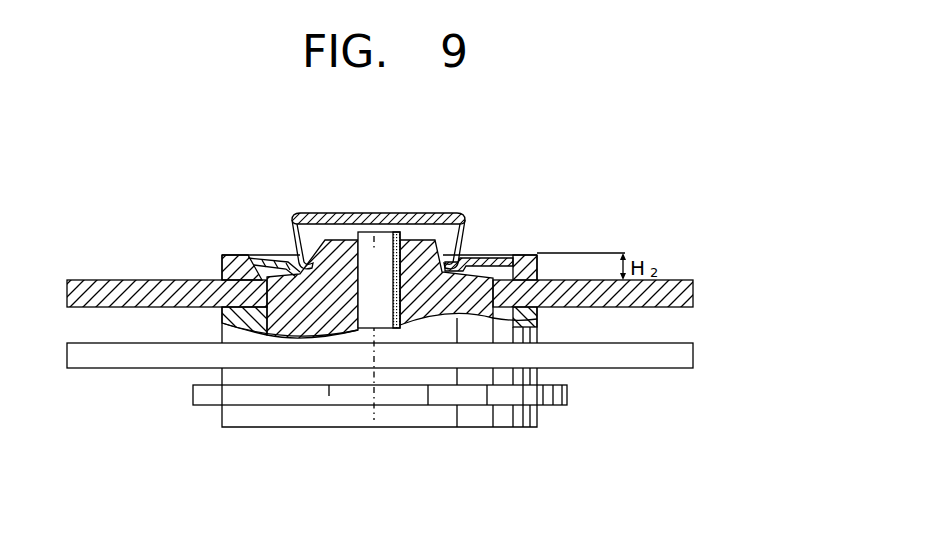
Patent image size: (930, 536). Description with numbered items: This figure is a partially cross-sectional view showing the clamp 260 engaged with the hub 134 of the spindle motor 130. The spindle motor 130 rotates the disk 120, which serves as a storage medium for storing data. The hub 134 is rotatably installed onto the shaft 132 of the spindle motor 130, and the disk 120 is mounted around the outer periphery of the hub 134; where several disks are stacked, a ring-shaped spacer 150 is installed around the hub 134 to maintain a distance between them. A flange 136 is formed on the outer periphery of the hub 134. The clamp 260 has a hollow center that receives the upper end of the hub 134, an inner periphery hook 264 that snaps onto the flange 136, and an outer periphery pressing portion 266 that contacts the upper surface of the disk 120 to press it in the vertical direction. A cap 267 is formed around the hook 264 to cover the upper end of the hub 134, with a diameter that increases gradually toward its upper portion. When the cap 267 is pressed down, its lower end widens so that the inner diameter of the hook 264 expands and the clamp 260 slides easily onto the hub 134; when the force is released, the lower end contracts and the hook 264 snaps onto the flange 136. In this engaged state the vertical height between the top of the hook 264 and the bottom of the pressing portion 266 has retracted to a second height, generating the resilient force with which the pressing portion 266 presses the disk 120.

The disk 120 is at (693, 295).
The spindle motor 130 is at (560, 431).
The shaft 132 is at (383, 232).
The hub 134 is at (428, 243).
The flange 136 is at (446, 262).
The spacer 150 is at (540, 318).
The clamp 260 is at (338, 193).
The hook 264 is at (302, 213).
The pressing portion 266 is at (224, 254).
The cap 267 is at (358, 212).